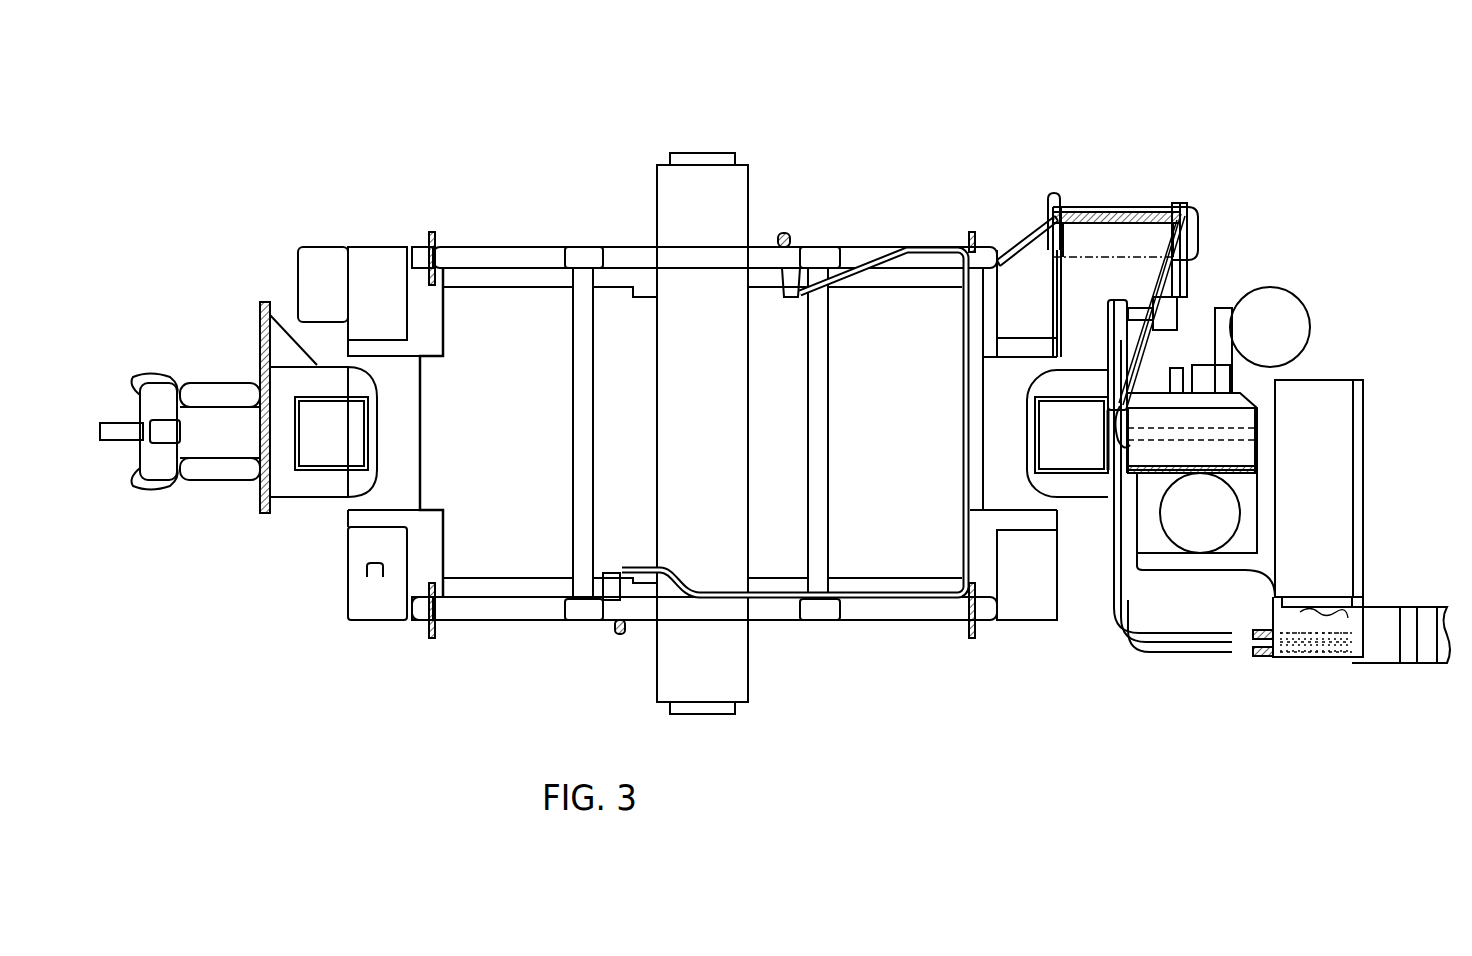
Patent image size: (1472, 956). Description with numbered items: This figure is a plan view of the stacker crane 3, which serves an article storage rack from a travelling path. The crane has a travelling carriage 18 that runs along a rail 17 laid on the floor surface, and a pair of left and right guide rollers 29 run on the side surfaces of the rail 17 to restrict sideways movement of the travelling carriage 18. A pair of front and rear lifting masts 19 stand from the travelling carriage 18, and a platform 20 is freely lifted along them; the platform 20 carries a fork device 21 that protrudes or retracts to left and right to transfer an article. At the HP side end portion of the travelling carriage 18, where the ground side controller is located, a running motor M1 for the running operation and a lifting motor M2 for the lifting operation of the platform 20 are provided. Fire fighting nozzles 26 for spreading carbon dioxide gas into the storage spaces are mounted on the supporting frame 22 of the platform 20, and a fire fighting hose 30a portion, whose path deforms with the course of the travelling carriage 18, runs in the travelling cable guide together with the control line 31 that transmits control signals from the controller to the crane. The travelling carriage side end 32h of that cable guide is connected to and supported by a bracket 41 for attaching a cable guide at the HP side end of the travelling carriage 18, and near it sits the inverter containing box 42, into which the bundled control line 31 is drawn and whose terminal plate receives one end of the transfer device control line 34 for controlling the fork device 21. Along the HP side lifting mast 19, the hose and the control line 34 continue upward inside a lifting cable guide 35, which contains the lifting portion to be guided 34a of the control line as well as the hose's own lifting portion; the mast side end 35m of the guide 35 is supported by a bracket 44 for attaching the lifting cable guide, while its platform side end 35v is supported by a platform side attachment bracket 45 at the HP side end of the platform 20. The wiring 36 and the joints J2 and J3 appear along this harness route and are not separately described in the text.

The stacker crane 3 is at (844, 727).
The rail 17 is at (118, 441).
The travelling carriage 18 is at (272, 518).
The lifting mast 19 is at (318, 475).
The platform 20 is at (400, 643).
The fork device 21 is at (728, 662).
The supporting frame 22 is at (484, 255).
The fire fighting nozzle 26 is at (784, 233).
The guide rollers 29 is at (160, 376).
The travelling portion to be guided 30a is at (1318, 660).
The control line 31 is at (1342, 597).
The travelling carriage side end 32h is at (1402, 603).
The transfer device control line 34 is at (1278, 448).
The lifting portion to be guided 34a is at (1110, 212).
The lifting cable guide 35 is at (1212, 217).
The mast side end 35m is at (1178, 205).
The platform side end 35v is at (1063, 195).
The wire harness 36 is at (888, 290).
The bracket for attaching a cable guide 41 is at (1280, 612).
The inverter containing box 42 is at (1325, 385).
The bracket for attaching the lifting cable guide 44 is at (1120, 330).
The platform side attachment bracket 45 is at (1048, 208).
The joint connector J2 is at (1262, 660).
The joint cable J3 is at (1182, 320).
The running motor M1 is at (1280, 306).
The lifting motor M2 is at (1185, 528).